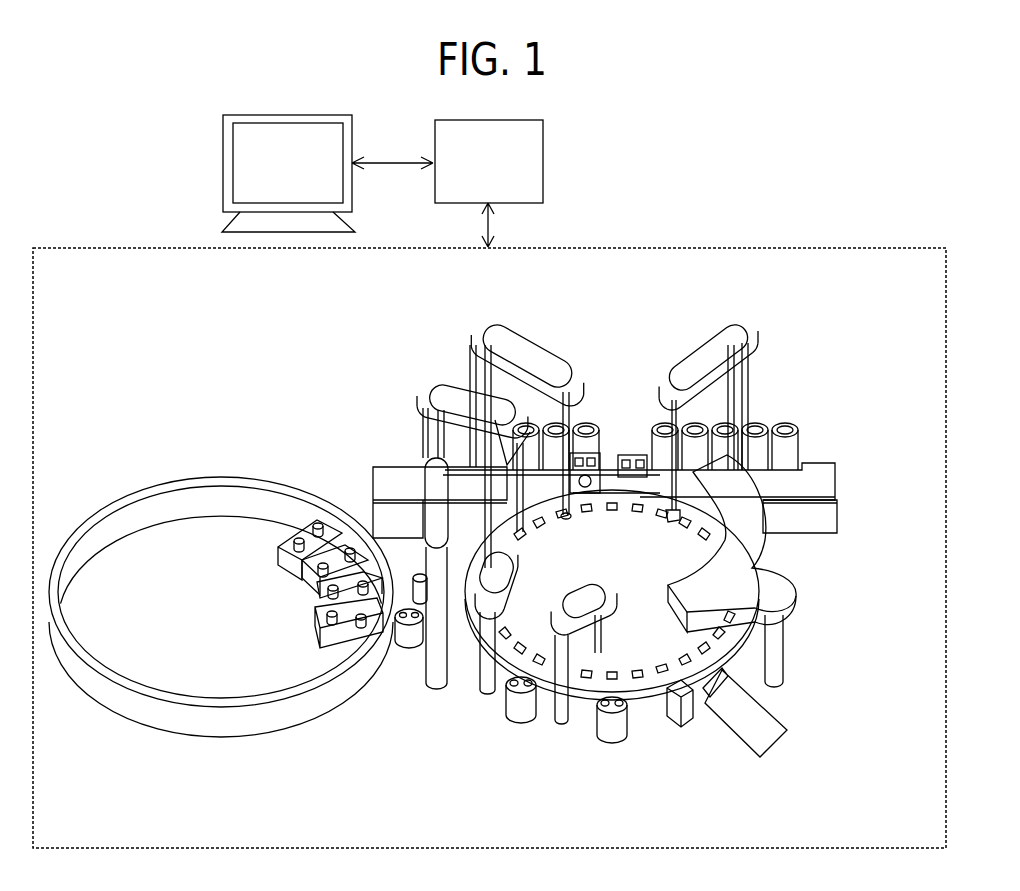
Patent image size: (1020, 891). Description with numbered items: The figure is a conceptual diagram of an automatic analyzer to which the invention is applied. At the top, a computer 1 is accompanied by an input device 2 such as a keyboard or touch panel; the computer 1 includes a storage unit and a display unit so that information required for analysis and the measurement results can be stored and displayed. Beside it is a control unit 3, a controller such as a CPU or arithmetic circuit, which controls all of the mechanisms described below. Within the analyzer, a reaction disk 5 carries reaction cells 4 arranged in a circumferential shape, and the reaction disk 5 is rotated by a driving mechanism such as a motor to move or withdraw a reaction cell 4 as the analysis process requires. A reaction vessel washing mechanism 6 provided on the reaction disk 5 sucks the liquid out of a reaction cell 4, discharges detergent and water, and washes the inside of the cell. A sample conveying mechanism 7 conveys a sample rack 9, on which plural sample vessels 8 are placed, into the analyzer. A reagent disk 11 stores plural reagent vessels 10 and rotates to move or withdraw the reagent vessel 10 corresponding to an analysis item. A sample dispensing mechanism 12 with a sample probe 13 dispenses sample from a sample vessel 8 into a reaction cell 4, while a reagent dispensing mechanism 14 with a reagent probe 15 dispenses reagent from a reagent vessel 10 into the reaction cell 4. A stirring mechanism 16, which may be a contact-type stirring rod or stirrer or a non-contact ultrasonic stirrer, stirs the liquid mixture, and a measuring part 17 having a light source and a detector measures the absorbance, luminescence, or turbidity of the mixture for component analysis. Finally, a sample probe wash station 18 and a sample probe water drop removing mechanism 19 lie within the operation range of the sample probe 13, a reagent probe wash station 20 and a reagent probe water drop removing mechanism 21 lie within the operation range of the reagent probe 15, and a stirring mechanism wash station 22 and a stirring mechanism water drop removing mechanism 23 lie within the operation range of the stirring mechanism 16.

The computer 1 is at (258, 177).
The input device 2 is at (247, 222).
The control unit 3 is at (513, 170).
The reaction cell 4 is at (513, 648).
The reaction disk 5 is at (642, 708).
The reaction vessel washing mechanism 6 is at (773, 590).
The sample conveying mechanism 7 is at (823, 520).
The sample vessel 8 is at (783, 428).
The sample rack 9 is at (787, 487).
The reagent vessel 10 is at (317, 628).
The reagent disk 11 is at (197, 508).
The sample dispensing mechanism 12 is at (722, 332).
The sample probe 13 is at (668, 412).
The reagent dispensing mechanism 14 is at (437, 392).
The reagent probe 15 is at (420, 460).
The stirring mechanism 16 is at (583, 597).
The measuring part 17 is at (777, 742).
The sample probe wash station 18 is at (573, 377).
The sample probe water drop removing mechanism 19 is at (625, 455).
The reagent probe wash station 20 is at (408, 635).
The reagent probe water drop removing mechanism 21 is at (398, 617).
The stirring mechanism wash station 22 is at (605, 712).
The stirring mechanism water drop removing mechanism 23 is at (618, 713).